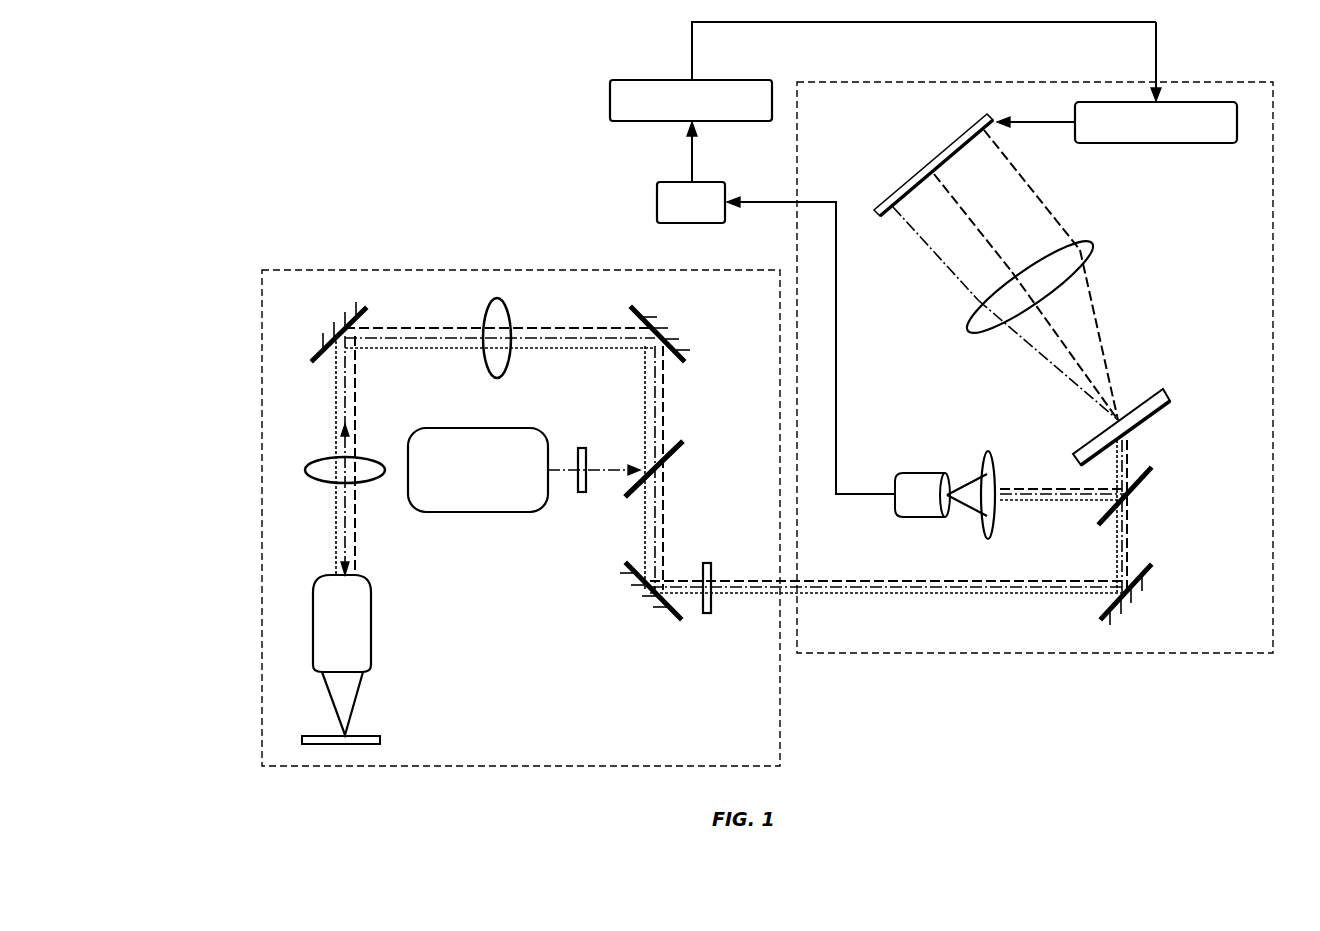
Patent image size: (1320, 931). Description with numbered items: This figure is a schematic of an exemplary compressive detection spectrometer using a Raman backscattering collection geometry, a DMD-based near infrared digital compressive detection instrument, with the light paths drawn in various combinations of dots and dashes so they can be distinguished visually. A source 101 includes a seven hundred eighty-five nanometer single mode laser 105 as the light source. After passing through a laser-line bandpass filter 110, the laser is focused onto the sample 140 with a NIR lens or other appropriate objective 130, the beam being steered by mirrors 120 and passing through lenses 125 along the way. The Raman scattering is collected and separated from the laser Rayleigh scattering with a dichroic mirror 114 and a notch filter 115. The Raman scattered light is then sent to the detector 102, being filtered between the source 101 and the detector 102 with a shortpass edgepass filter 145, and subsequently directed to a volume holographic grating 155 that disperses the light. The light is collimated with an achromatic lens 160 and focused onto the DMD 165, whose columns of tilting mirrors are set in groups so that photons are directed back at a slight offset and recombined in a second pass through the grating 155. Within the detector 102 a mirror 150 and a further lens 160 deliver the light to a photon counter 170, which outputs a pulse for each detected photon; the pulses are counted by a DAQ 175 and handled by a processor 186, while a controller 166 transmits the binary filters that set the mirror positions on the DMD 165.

The source 101 is at (370, 268).
The detector 102 is at (898, 80).
The 785 nm single mode laser 105 is at (455, 428).
The laser-line bandpass filter 110 is at (582, 500).
The dichroic mirror 114 is at (632, 502).
The 785 nm notch filter 115 is at (668, 458).
The mirror 120 is at (358, 310).
The lens 125 is at (505, 306).
The objective 130 is at (372, 620).
The sample 140 is at (382, 738).
The 900 nm shortpass (edgepass) filter 145 is at (707, 615).
The mirror 150 is at (1150, 482).
The volume holographic grating 155 is at (1155, 393).
The achromatic lens 160 is at (1100, 248).
The DMD 165 is at (998, 134).
The controller 166 is at (1200, 143).
The photon counter 170 is at (922, 473).
The DAQ 175 is at (657, 204).
The processor 186 is at (610, 101).